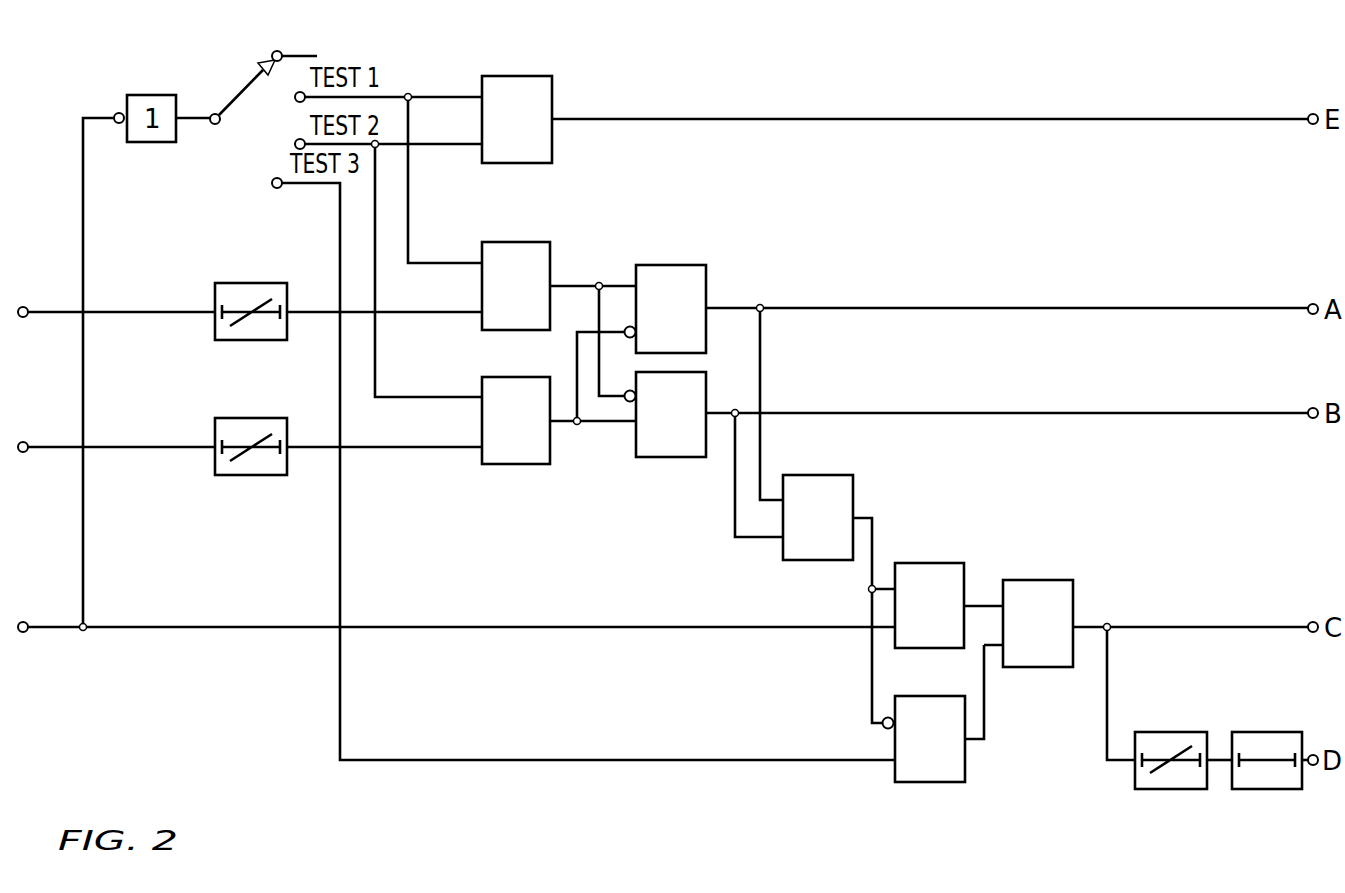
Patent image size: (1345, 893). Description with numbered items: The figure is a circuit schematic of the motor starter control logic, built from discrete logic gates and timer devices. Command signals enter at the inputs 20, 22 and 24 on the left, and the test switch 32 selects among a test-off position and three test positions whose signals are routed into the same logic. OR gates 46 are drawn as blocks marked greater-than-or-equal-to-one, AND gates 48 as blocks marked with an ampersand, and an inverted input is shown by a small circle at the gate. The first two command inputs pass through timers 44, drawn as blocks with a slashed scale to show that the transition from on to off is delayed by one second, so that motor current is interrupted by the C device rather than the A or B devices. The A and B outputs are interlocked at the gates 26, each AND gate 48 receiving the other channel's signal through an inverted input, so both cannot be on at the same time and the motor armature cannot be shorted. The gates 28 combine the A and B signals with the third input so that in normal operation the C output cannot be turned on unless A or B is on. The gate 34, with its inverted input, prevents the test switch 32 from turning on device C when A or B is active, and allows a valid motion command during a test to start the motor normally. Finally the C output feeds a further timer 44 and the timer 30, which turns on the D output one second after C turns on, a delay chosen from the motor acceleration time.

The first input terminal 20 is at (23, 305).
The second input terminal 22 is at (21, 440).
The third input terminal 24 is at (21, 620).
The gates 26 is at (723, 348).
The gates 28 is at (980, 562).
The timer 30 is at (1258, 732).
The test switch 32 is at (243, 88).
The gate 34 is at (965, 765).
The timers 44 is at (255, 283).
The OR gate 46 is at (552, 95).
The AND gate 48 is at (680, 265).